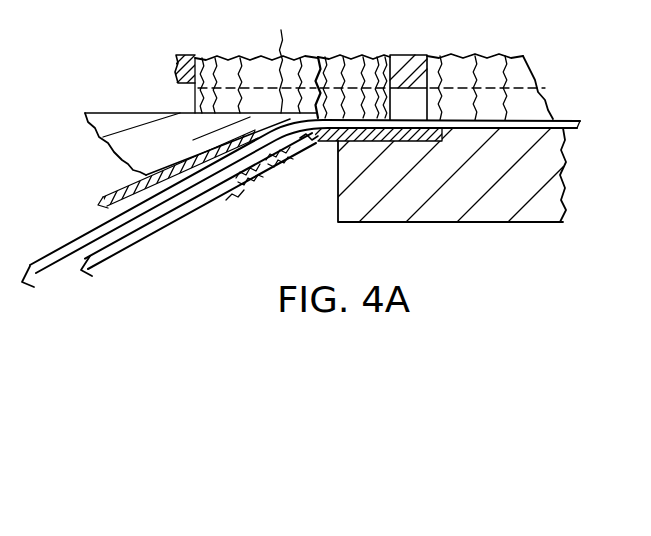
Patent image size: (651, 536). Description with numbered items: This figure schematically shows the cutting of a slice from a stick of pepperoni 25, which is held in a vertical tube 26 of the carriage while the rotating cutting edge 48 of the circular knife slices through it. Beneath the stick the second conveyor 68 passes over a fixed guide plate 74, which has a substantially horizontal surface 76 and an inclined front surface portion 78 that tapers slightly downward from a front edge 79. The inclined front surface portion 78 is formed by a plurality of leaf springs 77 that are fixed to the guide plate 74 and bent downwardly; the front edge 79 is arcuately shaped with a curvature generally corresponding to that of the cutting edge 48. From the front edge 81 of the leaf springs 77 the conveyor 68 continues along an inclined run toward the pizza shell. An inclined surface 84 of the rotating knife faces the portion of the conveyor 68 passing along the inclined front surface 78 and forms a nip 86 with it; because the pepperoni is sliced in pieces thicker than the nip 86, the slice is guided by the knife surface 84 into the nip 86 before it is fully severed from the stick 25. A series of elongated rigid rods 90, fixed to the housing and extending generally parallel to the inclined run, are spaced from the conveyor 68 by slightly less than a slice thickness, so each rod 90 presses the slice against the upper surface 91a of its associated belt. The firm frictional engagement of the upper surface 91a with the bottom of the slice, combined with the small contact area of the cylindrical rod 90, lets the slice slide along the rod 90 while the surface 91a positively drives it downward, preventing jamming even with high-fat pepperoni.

The stick of pepperoni 25 is at (250, 70).
The vertical tube 26 is at (404, 55).
The cutting edge 48 is at (317, 62).
The second conveyor 68 is at (583, 126).
The fixed guide plate 74 is at (460, 222).
The substantially horizontal surface 76 is at (461, 131).
The leaf springs 77 is at (264, 162).
The inclined front surface portion 78 is at (275, 160).
The front edge 79 is at (338, 143).
The front edge of the leaf springs 81 is at (248, 178).
The inclined surface of the rotating knife 84 is at (236, 130).
The nip 86 is at (310, 143).
The elongated rigid rod 90 is at (50, 262).
The upper surface of the conveyor belt 91a is at (150, 216).